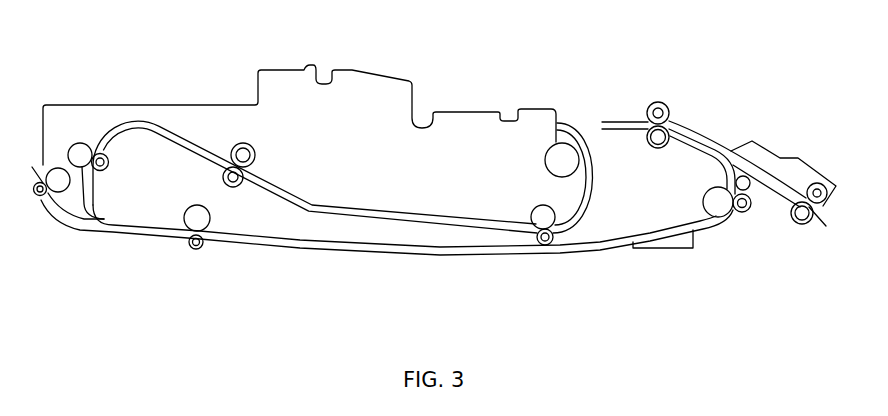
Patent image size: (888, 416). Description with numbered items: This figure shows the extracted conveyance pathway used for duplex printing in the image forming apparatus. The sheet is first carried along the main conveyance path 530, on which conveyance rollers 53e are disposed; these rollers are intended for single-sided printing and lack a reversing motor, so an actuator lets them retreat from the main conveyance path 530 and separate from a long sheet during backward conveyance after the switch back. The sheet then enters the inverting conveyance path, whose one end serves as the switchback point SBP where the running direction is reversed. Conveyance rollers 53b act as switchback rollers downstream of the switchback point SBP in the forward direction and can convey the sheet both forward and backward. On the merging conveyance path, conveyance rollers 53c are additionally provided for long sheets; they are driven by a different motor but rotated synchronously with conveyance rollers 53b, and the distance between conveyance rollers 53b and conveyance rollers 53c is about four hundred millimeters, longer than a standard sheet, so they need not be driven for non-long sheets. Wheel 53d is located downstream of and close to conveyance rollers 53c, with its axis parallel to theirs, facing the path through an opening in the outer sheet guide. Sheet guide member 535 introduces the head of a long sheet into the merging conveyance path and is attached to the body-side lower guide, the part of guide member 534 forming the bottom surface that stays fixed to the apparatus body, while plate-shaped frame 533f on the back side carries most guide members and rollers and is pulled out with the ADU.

The plate-shaped frame 533f is at (366, 84).
The main conveyance path 530 is at (627, 122).
The conveyance rollers 53e is at (668, 130).
The wheel 53d is at (745, 179).
The conveyance rollers 53c is at (720, 210).
The conveyance rollers 53b is at (203, 228).
The guide member 534 is at (442, 255).
The sheet guide member 535 is at (664, 250).
The switchback point SBP is at (120, 232).